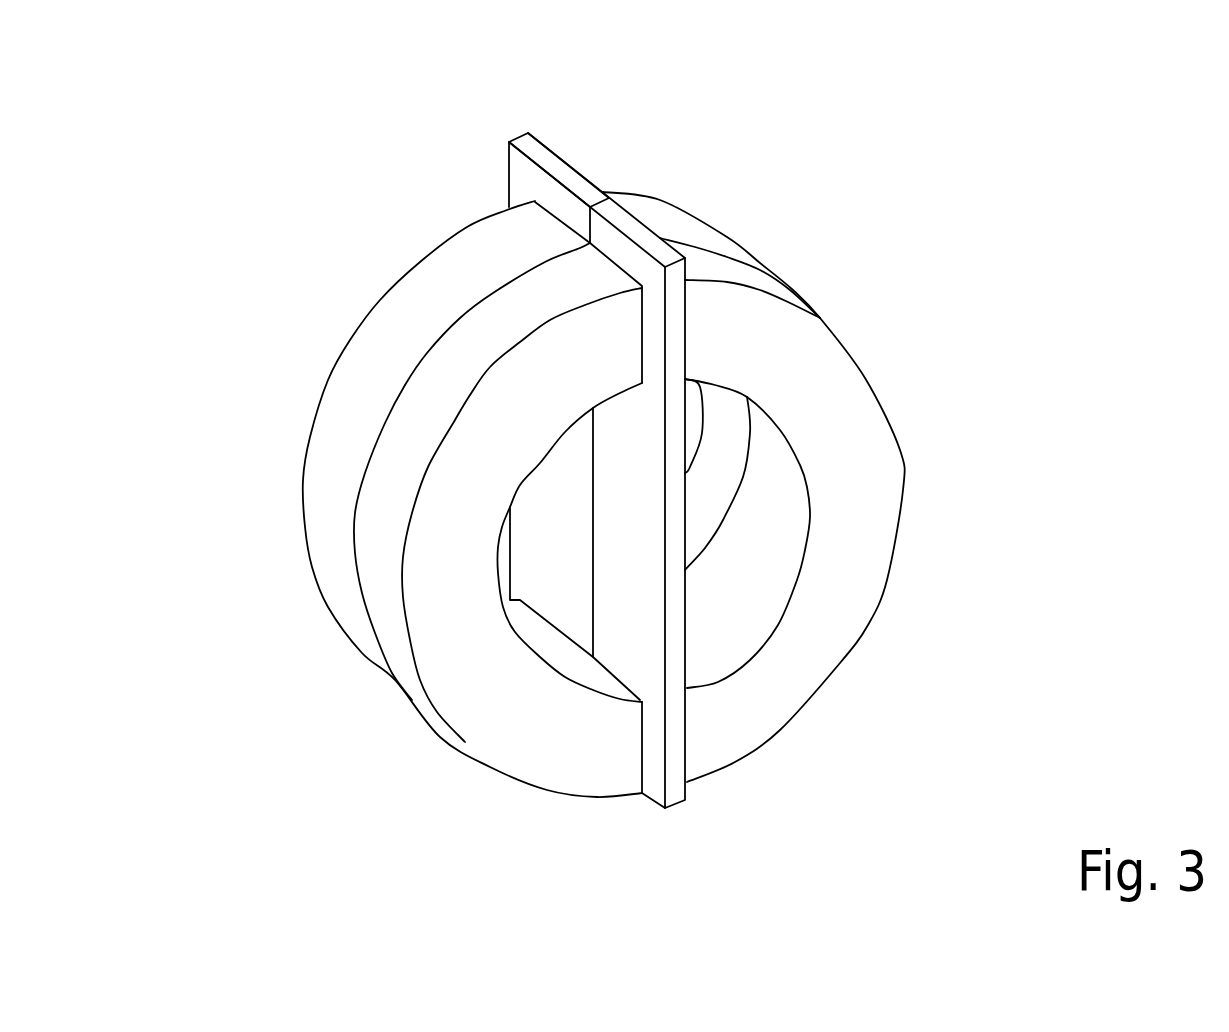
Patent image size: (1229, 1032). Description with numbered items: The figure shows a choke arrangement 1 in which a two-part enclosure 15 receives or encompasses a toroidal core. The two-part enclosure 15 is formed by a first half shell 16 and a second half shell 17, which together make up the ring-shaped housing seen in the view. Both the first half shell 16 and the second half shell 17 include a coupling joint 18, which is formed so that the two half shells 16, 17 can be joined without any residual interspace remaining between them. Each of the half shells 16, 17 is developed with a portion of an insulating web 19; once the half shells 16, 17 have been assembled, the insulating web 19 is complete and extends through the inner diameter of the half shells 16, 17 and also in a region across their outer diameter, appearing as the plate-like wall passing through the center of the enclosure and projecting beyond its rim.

The choke arrangement 1 is at (303, 172).
The two-part enclosure 15 is at (922, 762).
The first half shell 16 is at (330, 433).
The second half shell 17 is at (380, 535).
The coupling joint 18 is at (773, 263).
The insulating web 19 is at (620, 225).